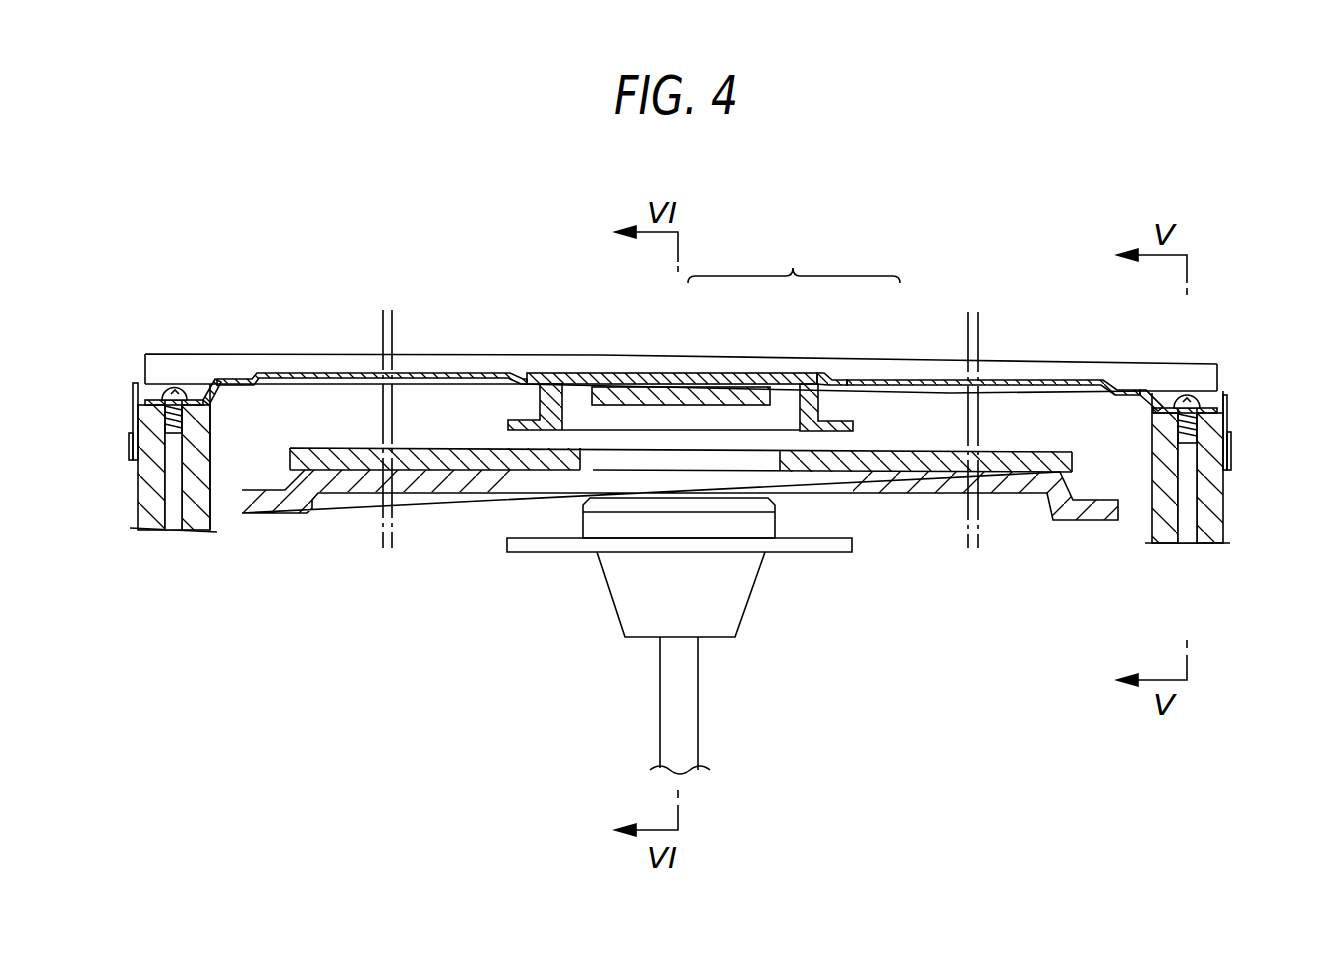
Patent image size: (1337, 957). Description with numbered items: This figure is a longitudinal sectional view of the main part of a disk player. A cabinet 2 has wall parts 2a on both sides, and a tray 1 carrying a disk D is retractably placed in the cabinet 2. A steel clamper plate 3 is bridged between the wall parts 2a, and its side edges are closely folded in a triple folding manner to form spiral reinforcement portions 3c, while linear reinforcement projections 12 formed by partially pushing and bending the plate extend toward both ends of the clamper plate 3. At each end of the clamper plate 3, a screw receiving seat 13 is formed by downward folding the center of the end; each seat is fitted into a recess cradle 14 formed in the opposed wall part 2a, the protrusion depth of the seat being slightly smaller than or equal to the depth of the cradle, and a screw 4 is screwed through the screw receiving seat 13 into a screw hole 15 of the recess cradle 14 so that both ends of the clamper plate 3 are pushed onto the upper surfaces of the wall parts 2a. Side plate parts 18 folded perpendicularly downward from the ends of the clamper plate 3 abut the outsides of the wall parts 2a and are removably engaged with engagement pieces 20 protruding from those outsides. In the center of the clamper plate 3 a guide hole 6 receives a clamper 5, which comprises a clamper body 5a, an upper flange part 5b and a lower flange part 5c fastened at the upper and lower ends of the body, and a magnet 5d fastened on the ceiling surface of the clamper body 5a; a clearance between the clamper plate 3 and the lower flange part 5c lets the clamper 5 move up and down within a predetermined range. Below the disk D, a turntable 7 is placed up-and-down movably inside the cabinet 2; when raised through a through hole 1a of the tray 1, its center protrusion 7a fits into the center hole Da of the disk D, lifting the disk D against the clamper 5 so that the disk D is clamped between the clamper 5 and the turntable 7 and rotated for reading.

The tray 1 is at (297, 508).
The through hole 1a is at (863, 474).
The cabinet 2 is at (1250, 530).
The wall parts 2a is at (200, 528).
The clamper plate 3 is at (318, 344).
The spiral reinforcement portions 3c is at (1021, 368).
The screws 4 is at (160, 386).
The clamper 5 is at (713, 331).
The clamper body 5a is at (752, 383).
The upper flange part 5b is at (830, 383).
The lower flange part 5c is at (857, 422).
The magnet 5d is at (713, 402).
The guide hole 6 is at (540, 390).
The turntable 7 is at (545, 552).
The center protrusion 7a is at (763, 525).
The linear reinforcement projections 12 is at (452, 374).
The screw receiving seats 13 is at (195, 398).
The recess cradles 14 is at (220, 388).
The screw holes 15 is at (172, 532).
The side plate parts 18 is at (133, 394).
The engagement pieces 20 is at (129, 447).
The disk D is at (1025, 461).
The center hole Da is at (580, 467).